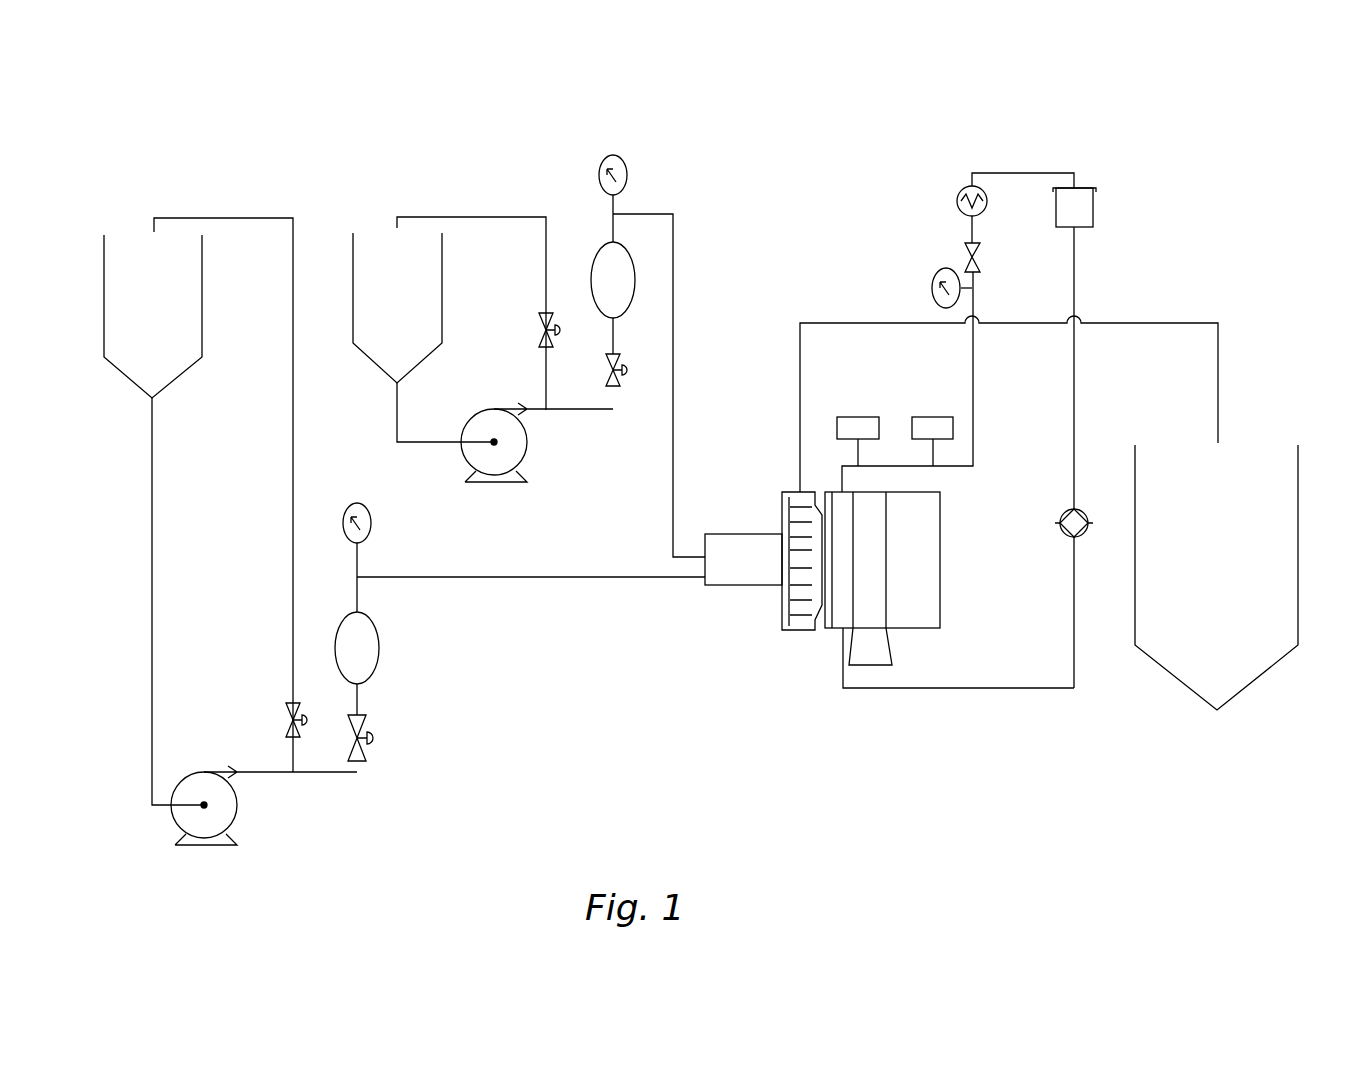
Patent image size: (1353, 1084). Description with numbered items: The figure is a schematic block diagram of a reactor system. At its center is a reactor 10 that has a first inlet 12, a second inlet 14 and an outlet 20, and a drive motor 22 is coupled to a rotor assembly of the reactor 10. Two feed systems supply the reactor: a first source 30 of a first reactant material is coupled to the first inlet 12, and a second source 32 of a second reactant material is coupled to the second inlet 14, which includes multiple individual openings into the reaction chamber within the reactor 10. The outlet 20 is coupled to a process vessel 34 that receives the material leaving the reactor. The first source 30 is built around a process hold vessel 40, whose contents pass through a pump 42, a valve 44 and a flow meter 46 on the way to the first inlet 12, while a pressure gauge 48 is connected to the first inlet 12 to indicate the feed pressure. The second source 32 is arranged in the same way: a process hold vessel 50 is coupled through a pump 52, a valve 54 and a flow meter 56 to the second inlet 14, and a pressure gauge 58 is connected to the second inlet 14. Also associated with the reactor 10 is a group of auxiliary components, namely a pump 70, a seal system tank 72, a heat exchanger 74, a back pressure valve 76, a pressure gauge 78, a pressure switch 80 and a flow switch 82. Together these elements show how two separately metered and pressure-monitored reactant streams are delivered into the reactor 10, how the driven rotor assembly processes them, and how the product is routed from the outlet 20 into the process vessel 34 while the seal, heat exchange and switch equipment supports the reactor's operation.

The reactor 10 is at (888, 640).
The first inlet 12 is at (690, 550).
The second inlet 14 is at (682, 580).
The outlet 20 is at (800, 485).
The drive motor 22 is at (942, 550).
The first source 30 is at (537, 324).
The second source 32 is at (298, 676).
The process vessel 34 is at (1175, 678).
The process hold vessel 40 is at (383, 375).
The pump 42 is at (478, 414).
The valve 44 is at (604, 373).
The flow meter 46 is at (594, 291).
The pressure gauge 48 is at (599, 182).
The process hold vessel 50 is at (170, 386).
The pump 52 is at (192, 778).
The valve 54 is at (367, 752).
The flow meter 56 is at (379, 652).
The pressure gauge 58 is at (371, 523).
The pump 70 is at (1058, 523).
The seal system tank 72 is at (1087, 229).
The heat exchanger 74 is at (956, 198).
The back pressure valve 76 is at (982, 258).
The pressure gauge 78 is at (932, 290).
The pressure switch 80 is at (848, 440).
The flow switch 82 is at (926, 440).